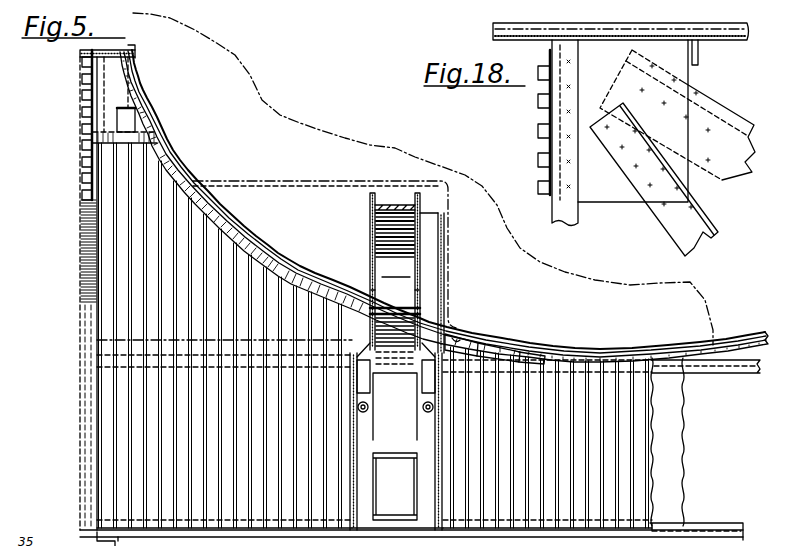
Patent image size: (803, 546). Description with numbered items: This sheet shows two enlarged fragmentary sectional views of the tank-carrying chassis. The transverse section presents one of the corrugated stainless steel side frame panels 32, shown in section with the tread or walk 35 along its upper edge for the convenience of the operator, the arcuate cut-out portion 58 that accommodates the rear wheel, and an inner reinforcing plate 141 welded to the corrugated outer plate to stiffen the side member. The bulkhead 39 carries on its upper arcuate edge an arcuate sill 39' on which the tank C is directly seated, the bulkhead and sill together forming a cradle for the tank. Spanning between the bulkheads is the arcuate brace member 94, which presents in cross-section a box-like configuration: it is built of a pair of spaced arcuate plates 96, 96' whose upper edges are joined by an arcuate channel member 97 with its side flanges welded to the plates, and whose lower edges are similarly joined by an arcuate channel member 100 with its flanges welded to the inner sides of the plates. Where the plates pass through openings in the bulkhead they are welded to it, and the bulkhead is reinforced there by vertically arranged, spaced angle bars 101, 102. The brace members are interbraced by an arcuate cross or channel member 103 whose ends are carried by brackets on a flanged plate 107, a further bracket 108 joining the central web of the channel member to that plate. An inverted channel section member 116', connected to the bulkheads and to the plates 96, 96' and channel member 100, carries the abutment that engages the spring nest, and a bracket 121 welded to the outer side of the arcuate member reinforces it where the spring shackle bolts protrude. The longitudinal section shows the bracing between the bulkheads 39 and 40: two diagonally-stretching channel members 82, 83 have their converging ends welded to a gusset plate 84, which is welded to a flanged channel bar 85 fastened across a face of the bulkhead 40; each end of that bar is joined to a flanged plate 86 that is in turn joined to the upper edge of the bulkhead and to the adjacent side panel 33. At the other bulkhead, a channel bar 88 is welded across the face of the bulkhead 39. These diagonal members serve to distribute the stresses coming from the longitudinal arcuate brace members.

In FIG. 5, the tank C is at (334, 126).
In FIG. 5, the side frame panel 32 is at (83, 143).
In FIG. 18, the side frame panel 33 is at (724, 41).
In FIG. 5, the tread or walk 35 is at (80, 52).
In FIG. 5, the bulkhead 39 is at (683, 442).
In FIG. 5, the arcuate sill 39' is at (444, 206).
In FIG. 18, the bulkhead 40 is at (537, 106).
In FIG. 5, the arcuate cut-out portion 58 is at (82, 258).
In FIG. 18, the diagonally-stretching channel member 82 is at (676, 222).
In FIG. 18, the diagonally-stretching channel member 83 is at (726, 136).
In FIG. 18, the gusset plate 84 is at (617, 190).
In FIG. 18, the flanged channel bar 85 is at (556, 212).
In FIG. 18, the flanged plate 86 is at (709, 64).
In FIG. 5, the channel bar 88 is at (738, 368).
In FIG. 5, the arcuate brace member 94 is at (370, 262).
In FIG. 5, the arcuate plate 96 is at (368, 245).
In FIG. 5, the arcuate plate 96' is at (454, 237).
In FIG. 5, the arcuate channel member 97 is at (393, 205).
In FIG. 5, the arcuate channel member 100 is at (398, 308).
In FIG. 5, the angle bar 101 is at (360, 508).
In FIG. 5, the angle bar 102 is at (427, 482).
In FIG. 5, the arcuate cross or channel member 103 is at (490, 347).
In FIG. 5, the flanged plate 107 is at (444, 270).
In FIG. 5, the bracket 108 is at (460, 338).
In FIG. 5, the inverted channel section member 116' is at (396, 436).
In FIG. 5, the bracket 121 is at (523, 346).
In FIG. 5, the inner reinforcing plate 141 is at (88, 170).